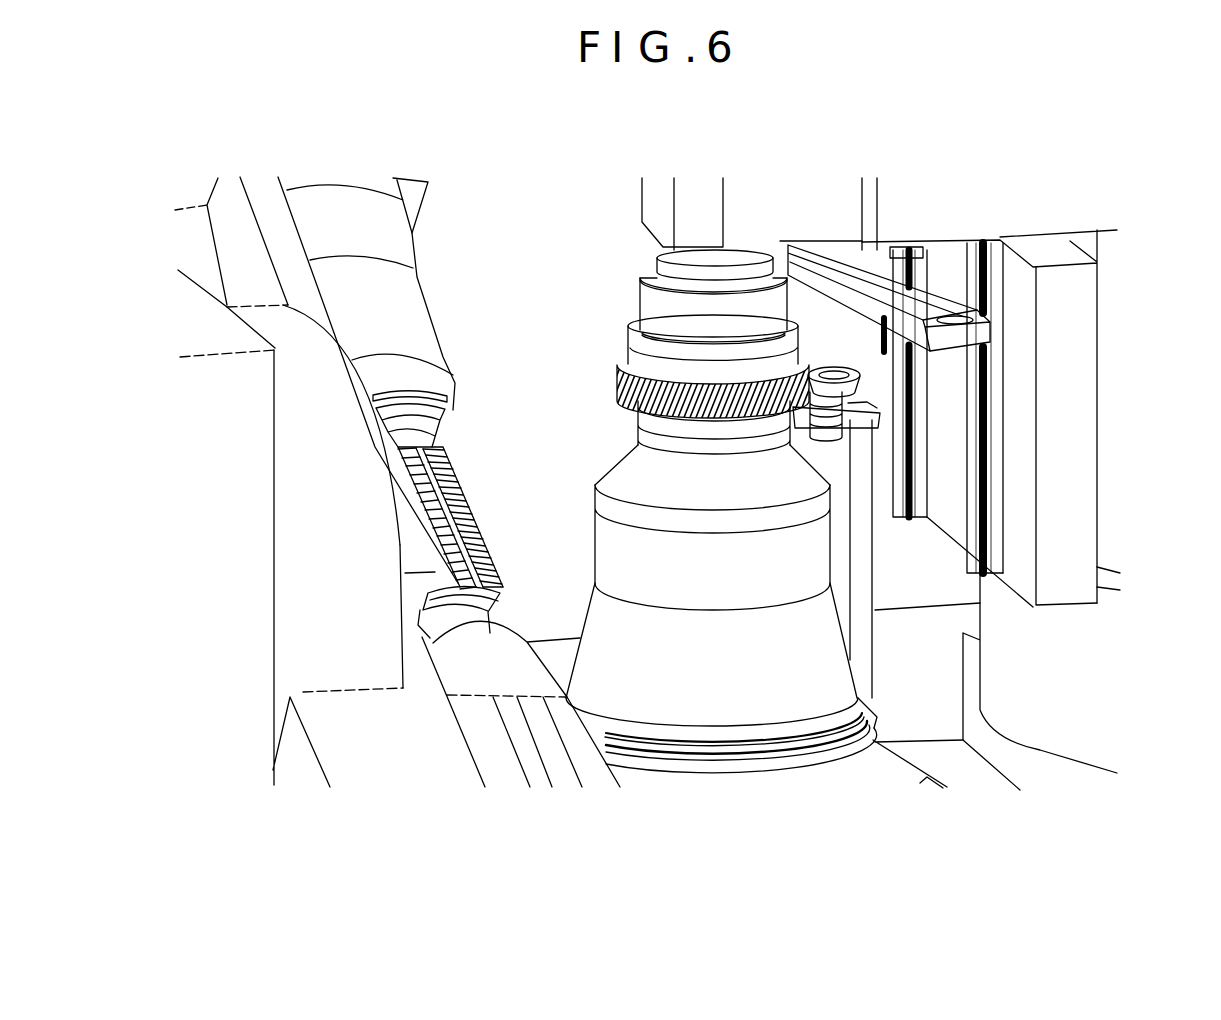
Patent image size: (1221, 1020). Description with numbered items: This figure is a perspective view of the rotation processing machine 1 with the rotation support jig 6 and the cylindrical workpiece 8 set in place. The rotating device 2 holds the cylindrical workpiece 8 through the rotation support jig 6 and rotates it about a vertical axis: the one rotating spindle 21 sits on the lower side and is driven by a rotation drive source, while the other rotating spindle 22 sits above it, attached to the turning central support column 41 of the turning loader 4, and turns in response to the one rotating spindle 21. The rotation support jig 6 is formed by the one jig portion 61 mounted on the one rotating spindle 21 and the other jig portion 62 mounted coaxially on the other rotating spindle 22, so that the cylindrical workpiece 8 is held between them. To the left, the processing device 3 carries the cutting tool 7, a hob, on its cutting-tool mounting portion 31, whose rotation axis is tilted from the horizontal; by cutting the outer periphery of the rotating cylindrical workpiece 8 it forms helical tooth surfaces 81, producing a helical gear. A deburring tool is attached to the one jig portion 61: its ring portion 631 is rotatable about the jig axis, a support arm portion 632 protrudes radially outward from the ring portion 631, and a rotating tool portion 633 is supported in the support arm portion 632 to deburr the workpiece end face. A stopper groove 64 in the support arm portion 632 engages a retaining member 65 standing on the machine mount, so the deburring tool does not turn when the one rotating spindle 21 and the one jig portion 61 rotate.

The rotation processing machine 1 is at (200, 192).
The rotating device 2 is at (764, 785).
The one rotating spindle 21 is at (712, 777).
The other rotating spindle 22 is at (688, 232).
The processing device 3 is at (352, 703).
The cutting-tool mounting portion 31 is at (481, 663).
The turning loader 4 is at (1004, 437).
The turning central support column 41 is at (973, 220).
The rotation support jig 6 is at (838, 456).
The one jig portion 61 is at (773, 567).
The other jig portion 62 is at (660, 307).
The ring portion 631 is at (660, 430).
The support arm portion 632 is at (862, 440).
The rotating tool portion 633 is at (833, 375).
The stopper groove 64 is at (868, 413).
The retaining member 65 is at (857, 517).
The cutting tool 7 is at (435, 547).
The cylindrical workpiece 8 is at (674, 355).
The tooth surfaces 81 is at (620, 390).